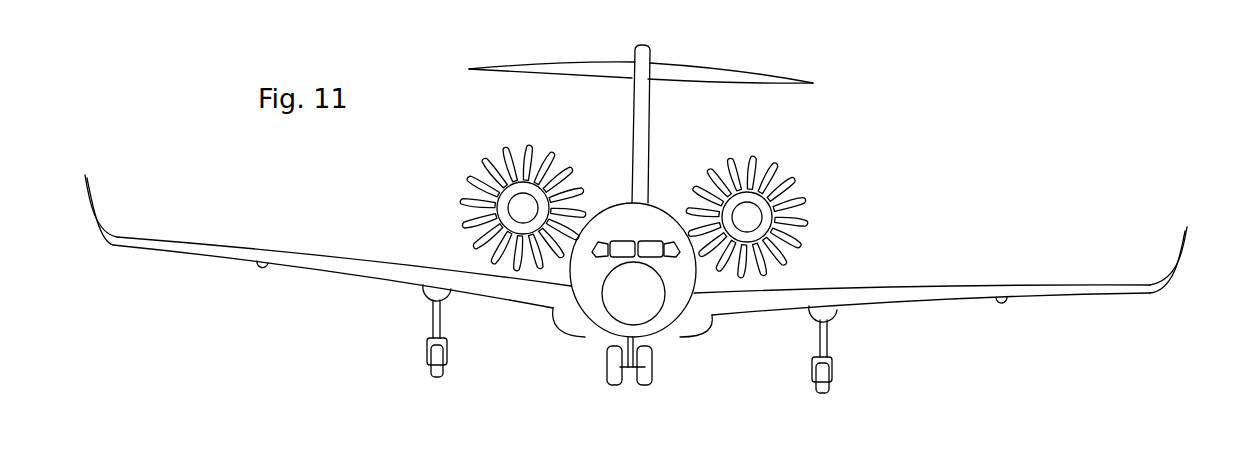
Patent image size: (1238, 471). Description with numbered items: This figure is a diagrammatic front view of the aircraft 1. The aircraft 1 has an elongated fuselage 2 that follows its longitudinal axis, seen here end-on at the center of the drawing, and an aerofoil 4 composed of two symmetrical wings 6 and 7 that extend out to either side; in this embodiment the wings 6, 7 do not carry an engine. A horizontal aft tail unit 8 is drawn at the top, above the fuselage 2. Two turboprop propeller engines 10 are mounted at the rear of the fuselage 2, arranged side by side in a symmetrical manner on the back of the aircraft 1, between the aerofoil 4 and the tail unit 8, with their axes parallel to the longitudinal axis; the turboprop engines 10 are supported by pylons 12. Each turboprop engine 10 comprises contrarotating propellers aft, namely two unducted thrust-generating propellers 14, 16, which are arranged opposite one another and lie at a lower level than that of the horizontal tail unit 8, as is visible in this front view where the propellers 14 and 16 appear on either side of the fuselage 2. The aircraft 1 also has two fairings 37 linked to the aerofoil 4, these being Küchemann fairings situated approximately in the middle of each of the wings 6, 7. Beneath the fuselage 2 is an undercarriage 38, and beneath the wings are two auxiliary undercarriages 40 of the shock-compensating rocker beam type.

The aircraft 1 is at (873, 126).
The fuselage 2 is at (657, 213).
The aerofoil 4 is at (952, 266).
The wing 6 is at (290, 256).
The wing 7 is at (1046, 286).
The horizontal aft tail unit 8 is at (680, 70).
The turboprop propeller engine 10 is at (438, 194).
The pylon 12 is at (590, 205).
The propeller 14 is at (805, 243).
The propeller 16 is at (798, 177).
The fairing 37 is at (448, 293).
The undercarriage 38 is at (650, 380).
The auxiliary undercarriage 40 is at (440, 370).